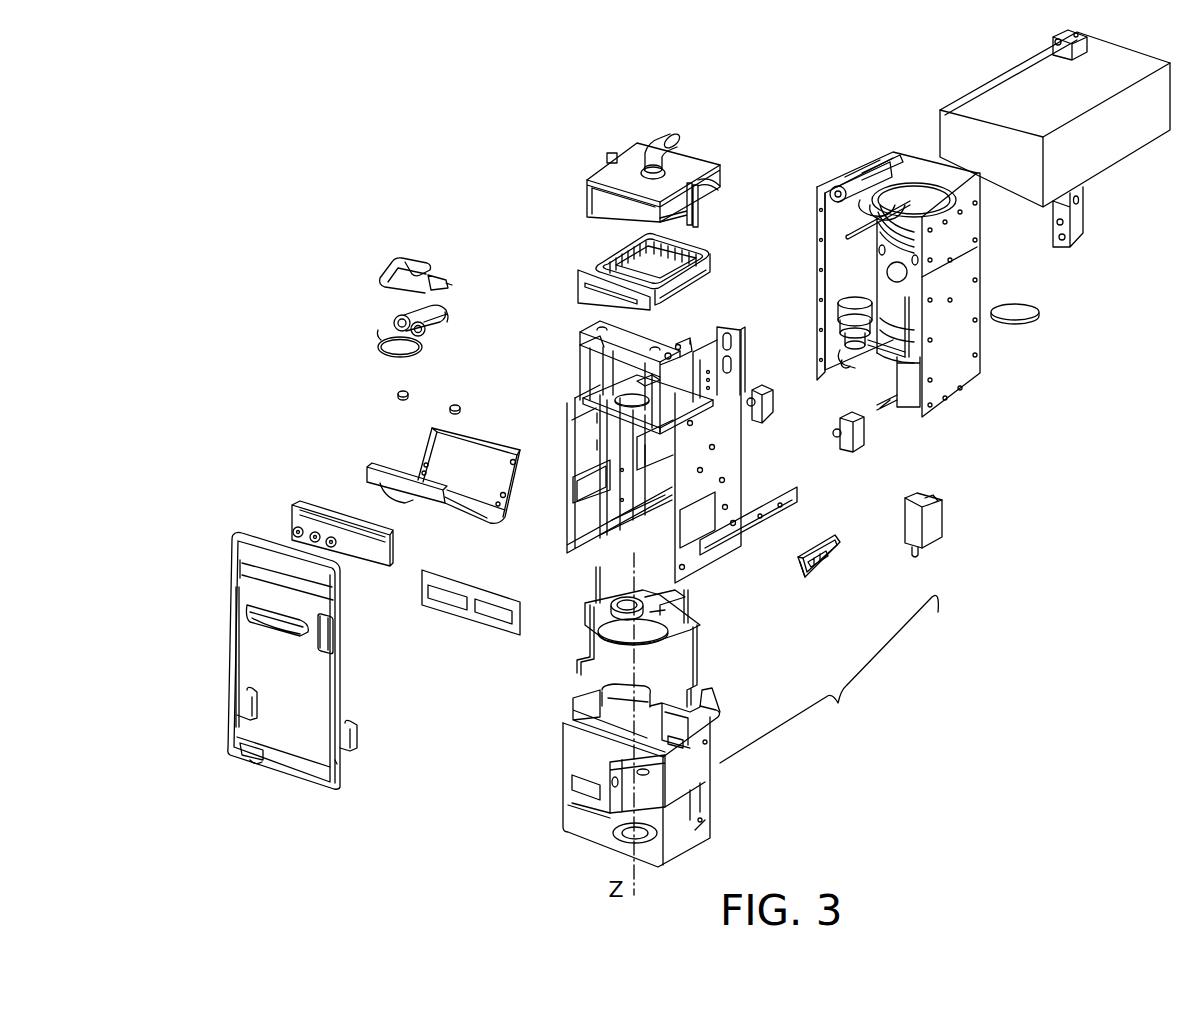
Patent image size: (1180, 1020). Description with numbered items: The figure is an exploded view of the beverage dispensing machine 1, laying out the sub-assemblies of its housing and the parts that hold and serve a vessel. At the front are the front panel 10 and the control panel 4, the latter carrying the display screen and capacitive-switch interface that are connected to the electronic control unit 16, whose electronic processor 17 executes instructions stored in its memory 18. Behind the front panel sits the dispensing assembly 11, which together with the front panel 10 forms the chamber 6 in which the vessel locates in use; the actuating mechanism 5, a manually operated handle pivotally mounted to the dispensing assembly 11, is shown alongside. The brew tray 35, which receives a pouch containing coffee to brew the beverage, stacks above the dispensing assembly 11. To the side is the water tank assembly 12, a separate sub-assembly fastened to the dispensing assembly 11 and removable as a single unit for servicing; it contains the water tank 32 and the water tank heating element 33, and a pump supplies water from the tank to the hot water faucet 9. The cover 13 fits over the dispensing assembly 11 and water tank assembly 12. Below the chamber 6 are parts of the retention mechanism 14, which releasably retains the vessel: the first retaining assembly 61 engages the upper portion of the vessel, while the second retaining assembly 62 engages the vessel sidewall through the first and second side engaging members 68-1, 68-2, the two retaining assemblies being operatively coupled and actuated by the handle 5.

The beverage dispensing machine 1 is at (356, 284).
The control panel 4 is at (294, 504).
The actuating mechanism 5 is at (420, 457).
The chamber 6 is at (565, 806).
The hot water faucet 9 is at (925, 533).
The front panel 10 is at (238, 617).
The dispensing assembly 11 is at (768, 68).
The water tank assembly 12 is at (730, 108).
The cover 13 is at (1073, 147).
The retention mechanism 14 is at (829, 679).
The electronic control unit 16 is at (463, 628).
The electronic processor 17 is at (450, 593).
The memory 18 is at (497, 613).
The water tank 32 is at (927, 197).
The water tank heating element 33 is at (1027, 320).
The brew tray 35 is at (592, 248).
The first retaining assembly 61 is at (712, 642).
The second retaining assembly 62 is at (842, 588).
The first side engaging member 68-1 is at (566, 418).
The second side engaging member 68-2 is at (822, 537).